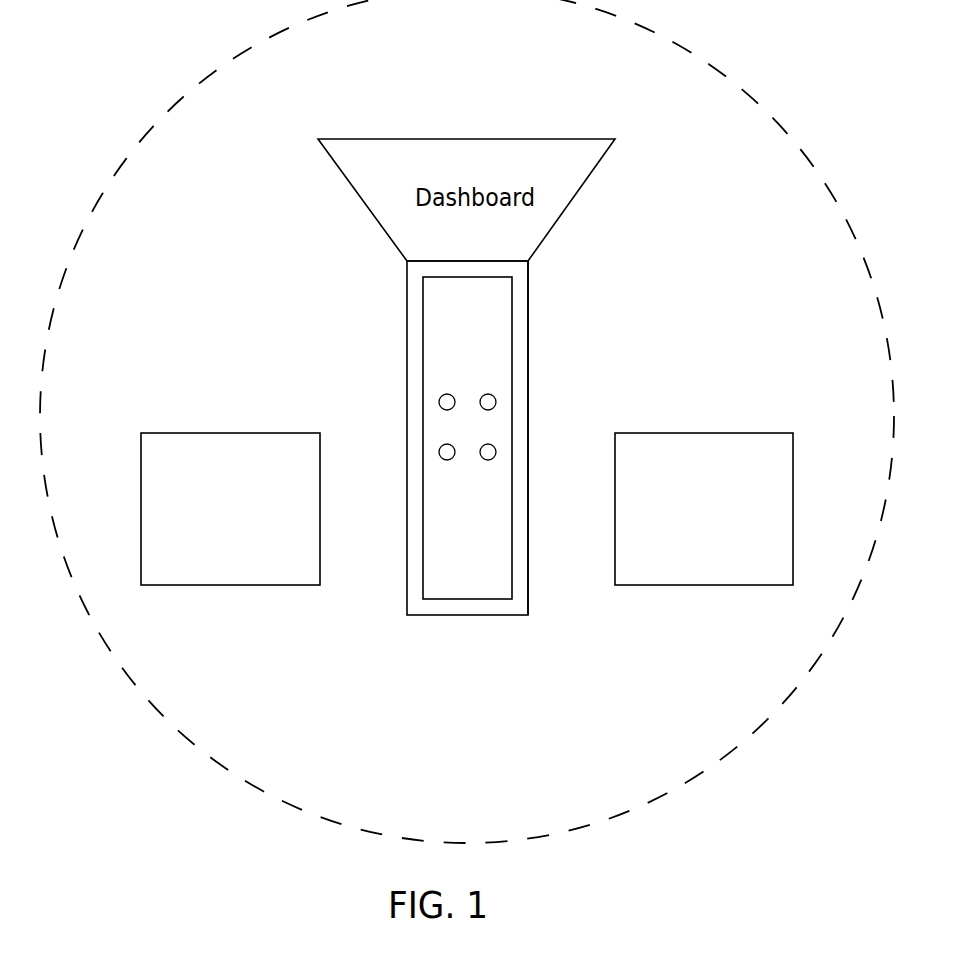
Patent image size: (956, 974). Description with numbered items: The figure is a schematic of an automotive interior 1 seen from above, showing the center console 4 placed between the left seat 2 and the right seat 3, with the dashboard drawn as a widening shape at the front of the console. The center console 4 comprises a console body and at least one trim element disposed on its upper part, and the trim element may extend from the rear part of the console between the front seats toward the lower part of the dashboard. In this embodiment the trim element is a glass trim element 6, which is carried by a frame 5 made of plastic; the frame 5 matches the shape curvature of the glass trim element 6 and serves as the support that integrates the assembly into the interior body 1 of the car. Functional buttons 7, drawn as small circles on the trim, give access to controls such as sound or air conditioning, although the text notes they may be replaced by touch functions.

The vehicle interior 1 is at (790, 135).
The left seat 2 is at (228, 585).
The right seat 3 is at (702, 585).
The center console 4 is at (406, 288).
The frame 5 is at (522, 295).
The glass trim element 6 is at (498, 339).
The control buttons 7 is at (496, 402).